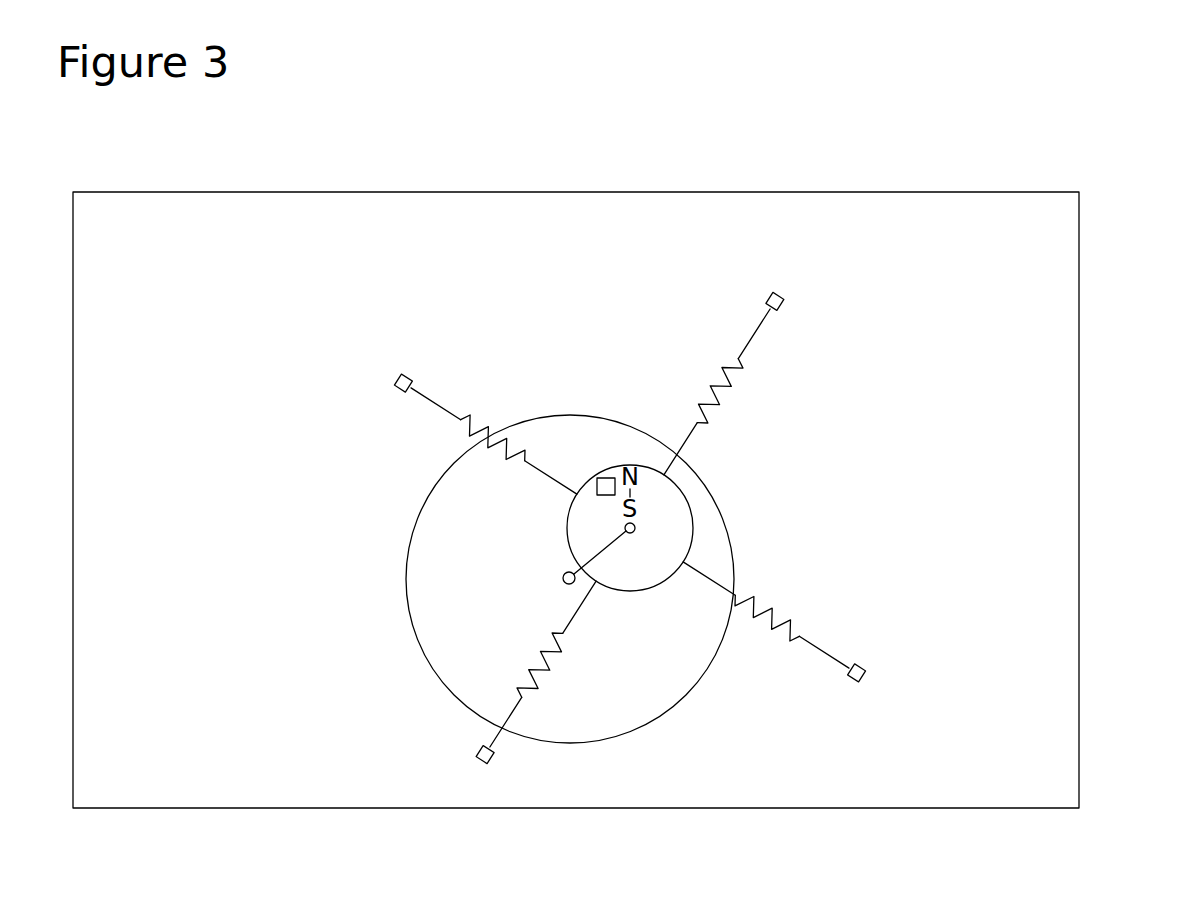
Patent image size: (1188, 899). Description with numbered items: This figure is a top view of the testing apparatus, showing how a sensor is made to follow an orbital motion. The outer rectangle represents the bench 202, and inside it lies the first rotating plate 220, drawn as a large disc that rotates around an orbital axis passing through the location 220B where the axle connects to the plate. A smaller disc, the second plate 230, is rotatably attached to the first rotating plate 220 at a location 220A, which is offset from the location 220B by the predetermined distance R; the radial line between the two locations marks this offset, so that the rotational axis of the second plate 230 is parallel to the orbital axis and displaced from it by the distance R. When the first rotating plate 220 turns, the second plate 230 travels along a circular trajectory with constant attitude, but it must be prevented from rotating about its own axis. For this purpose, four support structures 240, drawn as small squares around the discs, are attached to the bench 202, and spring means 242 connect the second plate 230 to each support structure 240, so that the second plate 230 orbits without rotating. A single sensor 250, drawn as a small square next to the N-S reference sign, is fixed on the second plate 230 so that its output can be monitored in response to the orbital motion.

The bench 202 is at (1062, 503).
The first rotating plate 220 is at (734, 565).
The location 220A is at (636, 527).
The location 220B is at (563, 578).
The second plate 230 is at (683, 490).
The support structure 240 is at (410, 373).
The spring means 242 is at (465, 415).
The sensor 250 is at (602, 474).
The predetermined distance R is at (607, 548).